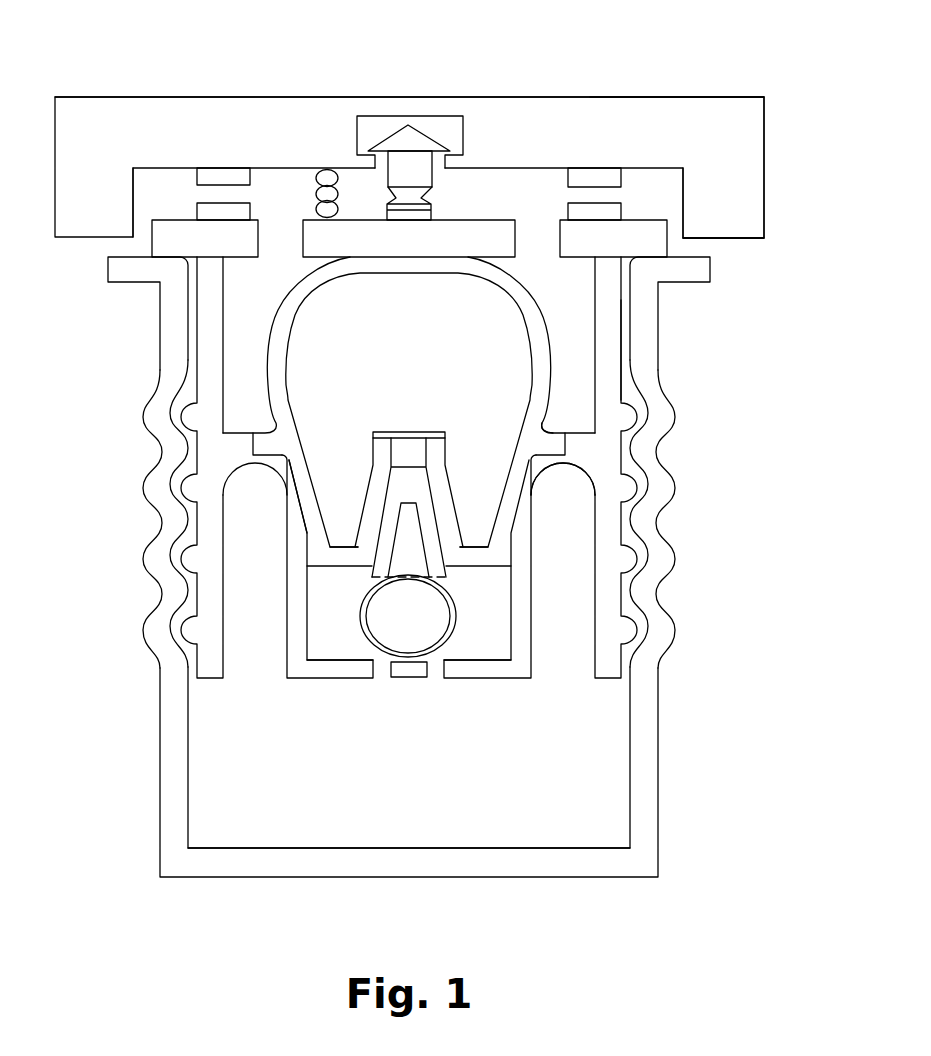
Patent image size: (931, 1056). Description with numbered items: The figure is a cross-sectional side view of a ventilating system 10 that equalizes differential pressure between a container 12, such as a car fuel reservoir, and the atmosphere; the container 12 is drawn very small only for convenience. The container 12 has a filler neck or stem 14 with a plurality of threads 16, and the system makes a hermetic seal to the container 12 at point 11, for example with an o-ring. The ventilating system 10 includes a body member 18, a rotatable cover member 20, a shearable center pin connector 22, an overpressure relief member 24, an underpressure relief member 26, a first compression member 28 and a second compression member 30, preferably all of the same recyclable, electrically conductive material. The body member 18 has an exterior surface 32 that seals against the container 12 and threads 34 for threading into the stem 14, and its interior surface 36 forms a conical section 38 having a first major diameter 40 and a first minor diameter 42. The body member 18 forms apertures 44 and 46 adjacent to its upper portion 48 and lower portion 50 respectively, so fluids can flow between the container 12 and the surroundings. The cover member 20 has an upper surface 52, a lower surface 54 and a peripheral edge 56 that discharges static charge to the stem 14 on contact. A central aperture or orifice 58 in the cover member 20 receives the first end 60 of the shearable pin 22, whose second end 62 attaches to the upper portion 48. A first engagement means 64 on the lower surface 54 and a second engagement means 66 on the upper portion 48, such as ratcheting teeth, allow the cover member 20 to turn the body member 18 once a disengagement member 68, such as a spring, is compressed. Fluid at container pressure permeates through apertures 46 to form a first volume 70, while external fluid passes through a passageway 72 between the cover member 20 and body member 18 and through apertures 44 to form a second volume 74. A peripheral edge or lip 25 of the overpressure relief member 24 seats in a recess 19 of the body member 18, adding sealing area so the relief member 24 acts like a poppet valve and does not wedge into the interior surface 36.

The ventilating system 10 is at (843, 58).
The sealing point 11 is at (167, 257).
The container 12 is at (393, 814).
The filler neck or stem 14 is at (173, 697).
The threads 16 is at (143, 410).
The body member 18 is at (205, 320).
The recess 19 is at (552, 468).
The rotatable cover member 20 is at (409, 167).
The shearable center pin connector 22 is at (410, 169).
The overpressure relief member 24 is at (295, 506).
The peripheral edge or lip 25 is at (553, 436).
The underpressure relief member 26 is at (378, 569).
The first compression member 28 is at (540, 345).
The second compression member 30 is at (453, 610).
The exterior surface 32 is at (620, 368).
The threads 34 is at (648, 632).
The interior surface 36 is at (298, 528).
The conical section 38 is at (298, 528).
The first major diameter 40 is at (283, 468).
The first minor diameter 42 is at (300, 526).
The apertures 44 is at (409, 228).
The apertures 46 is at (382, 675).
The upper portion 48 is at (485, 220).
The lower portion 50 is at (492, 682).
The upper surface 52 is at (590, 97).
The lower surface 54 is at (150, 170).
The peripheral edge 56 is at (723, 203).
The aperture or orifice 58 is at (448, 133).
The first end 60 is at (398, 125).
The second end 62 is at (377, 203).
The first engagement means 64 is at (613, 178).
The second engagement means 66 is at (613, 213).
The disengagement member 68 is at (318, 183).
The first volume 70 is at (501, 776).
The vent or passageway 72 is at (223, 193).
The second volume 74 is at (409, 345).